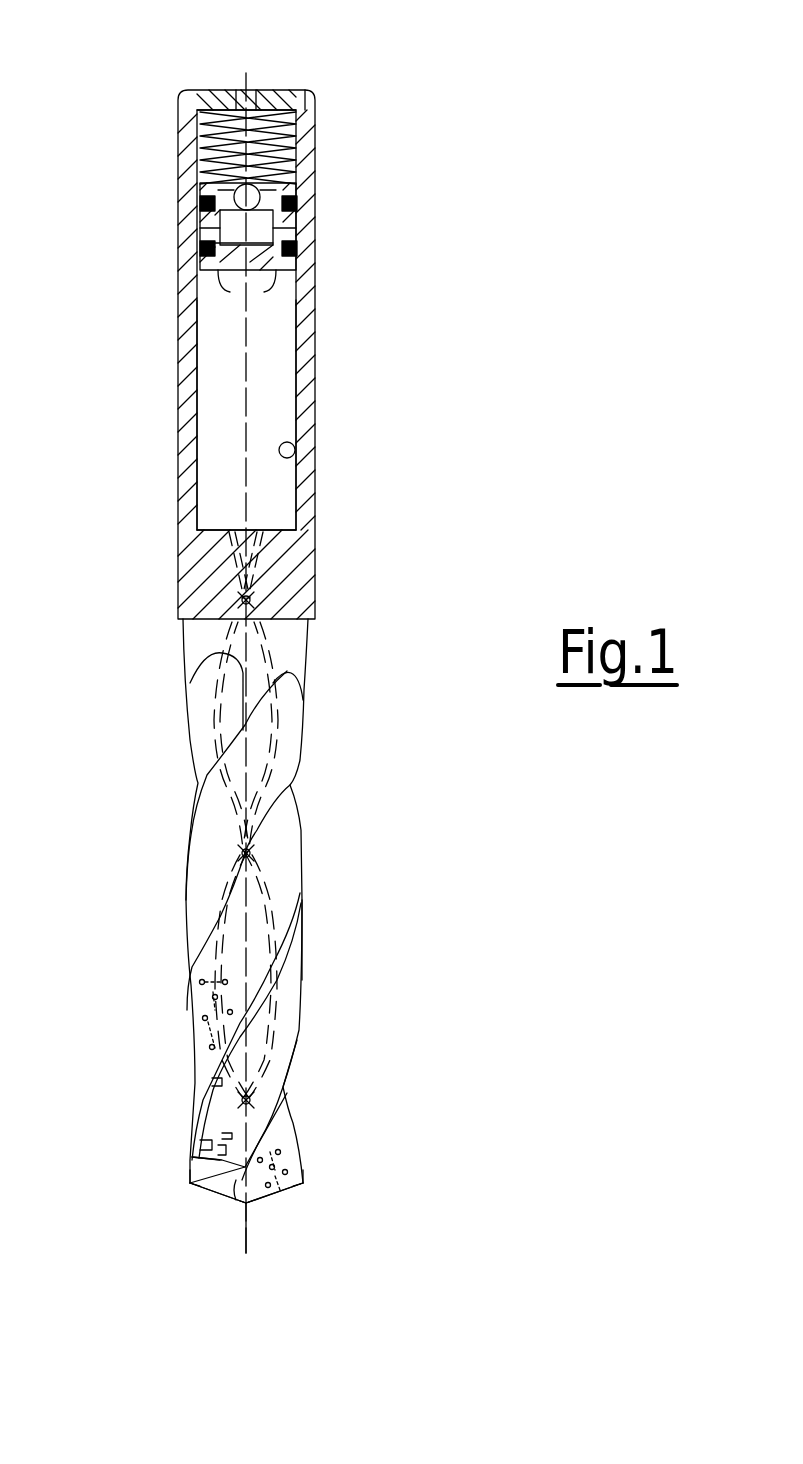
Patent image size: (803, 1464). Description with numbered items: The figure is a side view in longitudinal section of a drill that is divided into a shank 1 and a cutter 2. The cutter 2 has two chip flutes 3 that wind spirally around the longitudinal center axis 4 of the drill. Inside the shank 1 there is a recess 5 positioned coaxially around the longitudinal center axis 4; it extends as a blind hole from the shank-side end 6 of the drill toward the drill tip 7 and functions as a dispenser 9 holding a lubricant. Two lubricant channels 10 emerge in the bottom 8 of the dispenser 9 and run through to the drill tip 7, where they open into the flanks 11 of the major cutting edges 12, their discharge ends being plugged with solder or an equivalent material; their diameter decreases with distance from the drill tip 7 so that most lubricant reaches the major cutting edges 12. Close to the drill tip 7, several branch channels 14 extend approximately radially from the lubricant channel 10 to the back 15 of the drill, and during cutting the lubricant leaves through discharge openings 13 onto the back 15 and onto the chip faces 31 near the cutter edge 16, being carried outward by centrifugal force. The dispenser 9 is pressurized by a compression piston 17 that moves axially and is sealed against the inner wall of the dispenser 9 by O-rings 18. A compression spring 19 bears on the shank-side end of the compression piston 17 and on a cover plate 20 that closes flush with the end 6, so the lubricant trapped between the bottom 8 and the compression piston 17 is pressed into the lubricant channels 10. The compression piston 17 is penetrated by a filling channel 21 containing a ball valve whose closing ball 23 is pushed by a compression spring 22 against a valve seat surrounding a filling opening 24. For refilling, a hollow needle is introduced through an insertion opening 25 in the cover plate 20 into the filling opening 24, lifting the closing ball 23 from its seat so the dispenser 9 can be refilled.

The shank 1 is at (313, 383).
The cutter 2 is at (300, 825).
The chip flutes 3 is at (213, 842).
The longitudinal center axis 4 is at (248, 1223).
The recess 5 is at (295, 450).
The shank-side end 6 is at (302, 90).
The drill tip 7 is at (240, 1207).
The bottom 8 is at (207, 527).
The dispenser 9 is at (217, 405).
The lubricant channels 10 is at (215, 710).
The flanks 11 is at (233, 1193).
The major cutting edges 12 is at (293, 1190).
The discharge openings 13 is at (197, 1142).
The branch channels 14 is at (220, 1160).
The back 15 is at (287, 1047).
The cutter edge 16 is at (305, 1180).
The compression piston 17 is at (218, 290).
The O-rings 18 is at (200, 207).
The compression spring 19 is at (290, 126).
The cover plate 20 is at (213, 90).
The filling channel 21 is at (278, 303).
The compression spring 22 is at (298, 225).
The closing ball 23 is at (215, 190).
The filling opening 24 is at (296, 188).
The insertion opening 25 is at (240, 100).
The chip faces 31 is at (287, 1158).